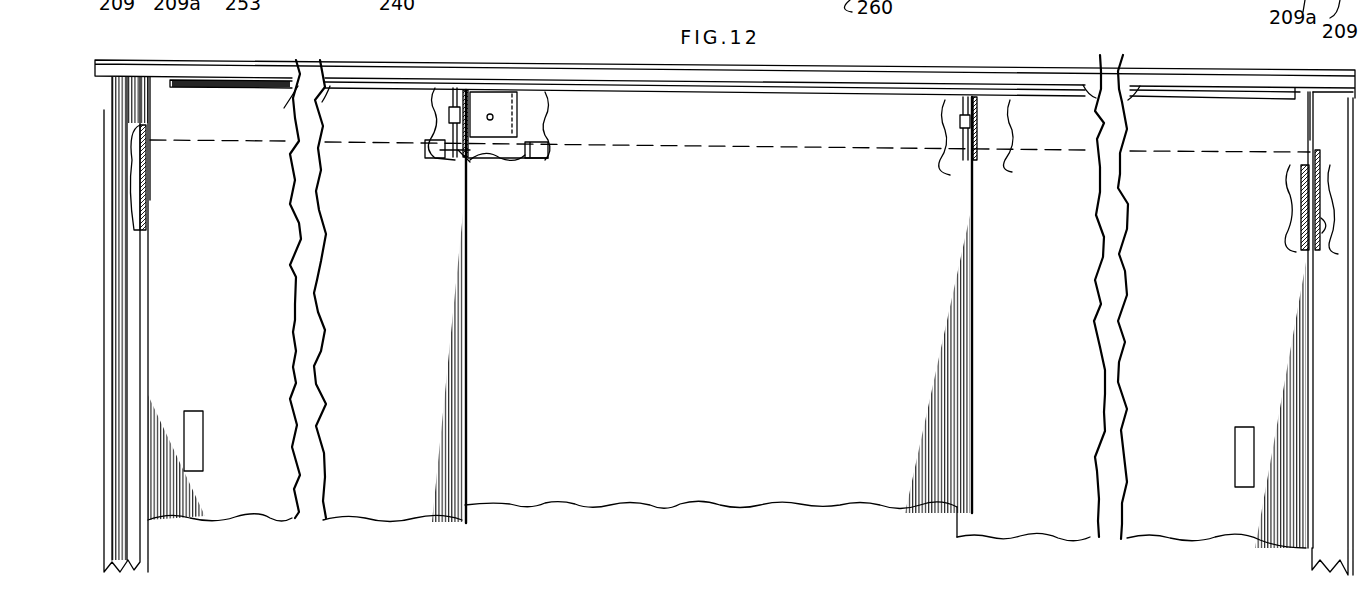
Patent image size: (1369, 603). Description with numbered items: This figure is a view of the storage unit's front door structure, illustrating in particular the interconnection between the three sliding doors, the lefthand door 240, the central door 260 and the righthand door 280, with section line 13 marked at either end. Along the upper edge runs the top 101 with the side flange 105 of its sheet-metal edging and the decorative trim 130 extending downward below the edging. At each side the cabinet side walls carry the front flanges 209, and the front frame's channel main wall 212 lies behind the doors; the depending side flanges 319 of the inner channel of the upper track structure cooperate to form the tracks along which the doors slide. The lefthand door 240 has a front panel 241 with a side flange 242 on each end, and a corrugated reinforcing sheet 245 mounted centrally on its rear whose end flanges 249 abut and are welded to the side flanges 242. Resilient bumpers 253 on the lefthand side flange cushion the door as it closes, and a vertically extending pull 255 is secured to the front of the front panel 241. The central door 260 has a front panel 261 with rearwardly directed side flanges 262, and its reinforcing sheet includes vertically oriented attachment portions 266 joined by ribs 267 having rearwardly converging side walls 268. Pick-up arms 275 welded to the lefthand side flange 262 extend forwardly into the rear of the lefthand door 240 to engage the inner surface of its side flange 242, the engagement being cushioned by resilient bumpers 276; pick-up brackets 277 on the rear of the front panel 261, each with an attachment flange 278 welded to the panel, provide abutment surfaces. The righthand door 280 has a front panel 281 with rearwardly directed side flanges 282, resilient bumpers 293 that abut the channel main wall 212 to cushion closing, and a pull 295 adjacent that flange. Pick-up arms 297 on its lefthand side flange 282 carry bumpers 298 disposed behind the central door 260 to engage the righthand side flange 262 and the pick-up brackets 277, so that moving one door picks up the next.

The section line 13- 13 is at (106, 107).
The top 101 is at (272, 58).
The side flange 105 is at (200, 70).
The decorative trim 130 is at (980, 68).
The front flange 209 is at (132, 258).
The main wall 212 is at (1320, 230).
The lefthand door 240 is at (250, 486).
The front panel 241 is at (242, 312).
The side flange 242 is at (470, 160).
The reinforcing sheet 245 is at (443, 148).
The end flange 249 is at (448, 156).
The resilient bumper 253 is at (150, 110).
The pull 255 is at (190, 430).
The central door 260 is at (720, 476).
The front panel 261 is at (728, 317).
The side flange 262 is at (985, 128).
The attachment portion 266 is at (548, 122).
The rib 267 is at (490, 158).
The rearwardly converging side wall 268 is at (542, 157).
The pick-up arm 275 is at (442, 95).
The resilient bumper 276 is at (447, 116).
The pick-up bracket 277 is at (517, 104).
The attachment flange 278 is at (505, 130).
The righthand door 280 is at (1158, 509).
The front panel 281 is at (1060, 322).
The side flange 282 is at (1302, 200).
The resilient bumper 293 is at (1310, 128).
The pull 295 is at (1243, 444).
The pick-up arm 297 is at (957, 105).
The bumper 298 is at (958, 125).
The side flange 319 is at (296, 92).